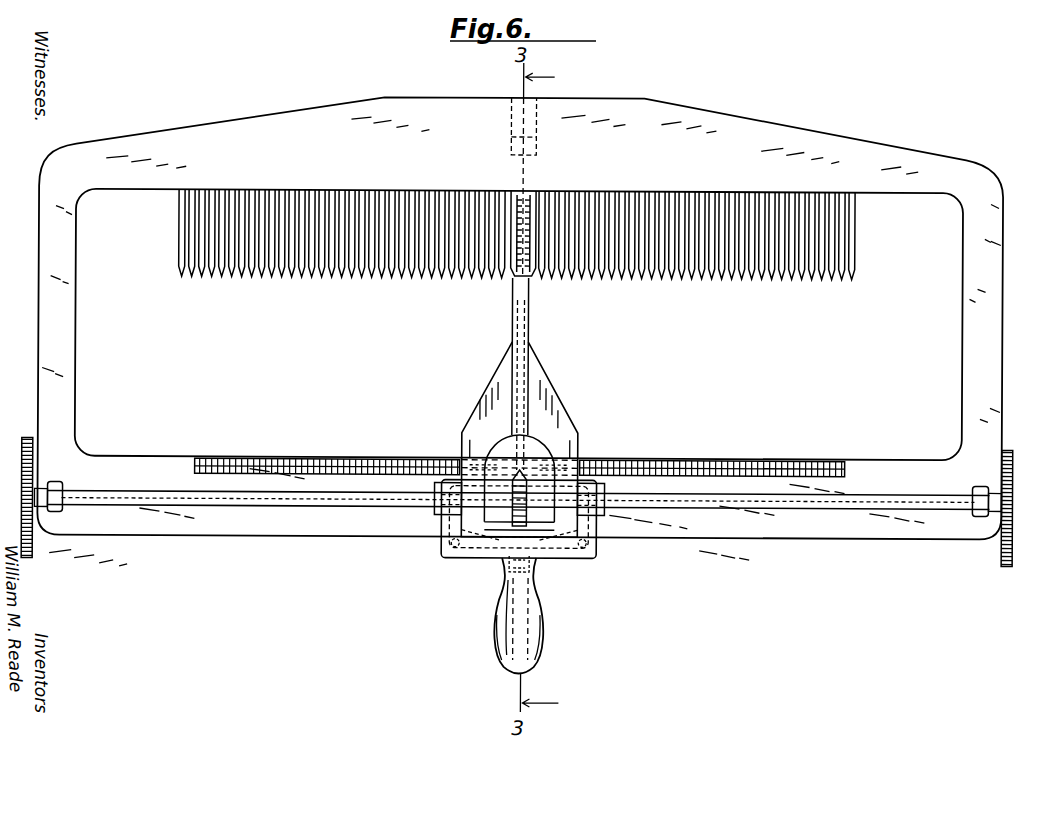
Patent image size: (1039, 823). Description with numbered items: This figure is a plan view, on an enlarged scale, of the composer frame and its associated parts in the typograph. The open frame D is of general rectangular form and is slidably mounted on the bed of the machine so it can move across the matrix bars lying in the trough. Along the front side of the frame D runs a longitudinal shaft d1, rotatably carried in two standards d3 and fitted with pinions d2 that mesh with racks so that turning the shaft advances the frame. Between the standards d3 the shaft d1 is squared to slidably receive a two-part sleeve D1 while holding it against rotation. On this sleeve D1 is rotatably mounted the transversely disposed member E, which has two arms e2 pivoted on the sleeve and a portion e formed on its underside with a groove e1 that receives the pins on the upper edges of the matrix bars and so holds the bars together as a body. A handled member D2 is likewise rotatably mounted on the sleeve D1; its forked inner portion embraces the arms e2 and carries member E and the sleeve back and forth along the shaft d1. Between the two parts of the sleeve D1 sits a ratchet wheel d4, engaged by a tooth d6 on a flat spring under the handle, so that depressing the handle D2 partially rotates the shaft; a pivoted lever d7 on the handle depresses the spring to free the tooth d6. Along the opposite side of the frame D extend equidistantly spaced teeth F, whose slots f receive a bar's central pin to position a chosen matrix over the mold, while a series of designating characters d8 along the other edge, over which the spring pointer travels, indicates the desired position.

The open frame D is at (140, 456).
The two-part sleeve D1 is at (533, 524).
The handled member D2 is at (540, 593).
The longitudinal shaft d1 is at (229, 508).
The pinion d2 is at (26, 441).
The standard d3 is at (48, 512).
The ratchet wheel d4 is at (512, 518).
The tooth or pawl d6 is at (560, 548).
The pivoted lever d7 is at (532, 637).
The designating characters d8 is at (322, 460).
The transversely disposed member E is at (492, 386).
The grooved portion e is at (512, 316).
The groove e1 is at (525, 333).
The arms e2 is at (578, 452).
The teeth F is at (297, 280).
The slot f is at (350, 279).